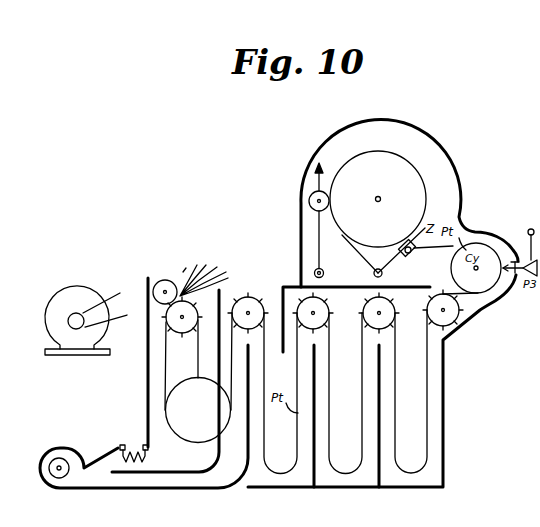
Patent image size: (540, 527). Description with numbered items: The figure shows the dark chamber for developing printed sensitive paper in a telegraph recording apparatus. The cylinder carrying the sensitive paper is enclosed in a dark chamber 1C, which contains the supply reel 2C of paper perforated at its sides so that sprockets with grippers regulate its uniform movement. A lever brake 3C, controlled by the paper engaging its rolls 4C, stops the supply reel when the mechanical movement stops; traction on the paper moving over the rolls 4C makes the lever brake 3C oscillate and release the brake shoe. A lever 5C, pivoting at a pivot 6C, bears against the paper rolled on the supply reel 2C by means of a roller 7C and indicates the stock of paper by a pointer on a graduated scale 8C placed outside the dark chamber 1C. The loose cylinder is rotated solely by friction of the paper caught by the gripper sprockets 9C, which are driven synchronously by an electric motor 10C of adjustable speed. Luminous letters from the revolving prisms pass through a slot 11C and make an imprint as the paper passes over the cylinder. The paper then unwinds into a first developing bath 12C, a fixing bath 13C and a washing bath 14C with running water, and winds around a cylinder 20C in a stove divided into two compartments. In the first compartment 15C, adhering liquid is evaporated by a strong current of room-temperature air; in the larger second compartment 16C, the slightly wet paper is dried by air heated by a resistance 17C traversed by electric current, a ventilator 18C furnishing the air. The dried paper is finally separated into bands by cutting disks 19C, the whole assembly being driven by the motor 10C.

The dark chamber 1C is at (447, 163).
The supply reel 2C is at (378, 199).
The lever brake 3C is at (377, 259).
The rolls 4C is at (421, 253).
The lever 5C is at (320, 258).
The pivot 6C is at (325, 273).
The roller 7C is at (309, 201).
The graduated scale 8C is at (336, 165).
The gripper sprockets 9C is at (255, 299).
The electric motor 10C is at (86, 311).
The slot 11C is at (515, 260).
The developing bath 12C is at (403, 410).
The fixing bath 13C is at (339, 411).
The washing bath 14C is at (282, 411).
The first compartment 15C is at (145, 416).
The second compartment 16C is at (172, 381).
The resistance 17C is at (148, 449).
The ventilator 18C is at (82, 457).
The cutting disks 19C is at (177, 297).
The cylinder 20C is at (198, 410).